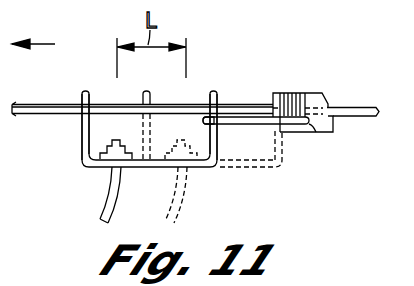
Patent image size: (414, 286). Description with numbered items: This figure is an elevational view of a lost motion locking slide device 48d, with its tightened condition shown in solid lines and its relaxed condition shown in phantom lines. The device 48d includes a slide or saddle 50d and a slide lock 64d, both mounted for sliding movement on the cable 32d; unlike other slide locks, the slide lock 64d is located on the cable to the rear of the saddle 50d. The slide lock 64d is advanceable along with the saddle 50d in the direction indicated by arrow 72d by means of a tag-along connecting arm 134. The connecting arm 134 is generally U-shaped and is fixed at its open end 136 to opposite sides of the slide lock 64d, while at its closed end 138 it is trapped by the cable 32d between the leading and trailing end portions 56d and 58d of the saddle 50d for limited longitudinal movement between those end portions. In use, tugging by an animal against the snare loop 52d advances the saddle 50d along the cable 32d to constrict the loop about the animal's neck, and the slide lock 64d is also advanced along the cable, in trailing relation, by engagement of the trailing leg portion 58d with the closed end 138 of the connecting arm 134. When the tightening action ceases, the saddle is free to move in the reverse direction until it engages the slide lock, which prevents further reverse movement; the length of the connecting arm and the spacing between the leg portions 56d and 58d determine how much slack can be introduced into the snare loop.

The arrow 72d is at (52, 44).
The leading end portion 56d is at (81, 93).
The trailing end portion 58d is at (218, 95).
The lost motion locking slide device 48d is at (70, 156).
The slide or saddle 50d is at (140, 178).
The snare loop 52d is at (93, 207).
The slide lock 64d is at (301, 80).
The cable 32d is at (348, 107).
The connecting arm 134 is at (254, 141).
The closed end 138 is at (204, 119).
The open end 136 is at (315, 132).